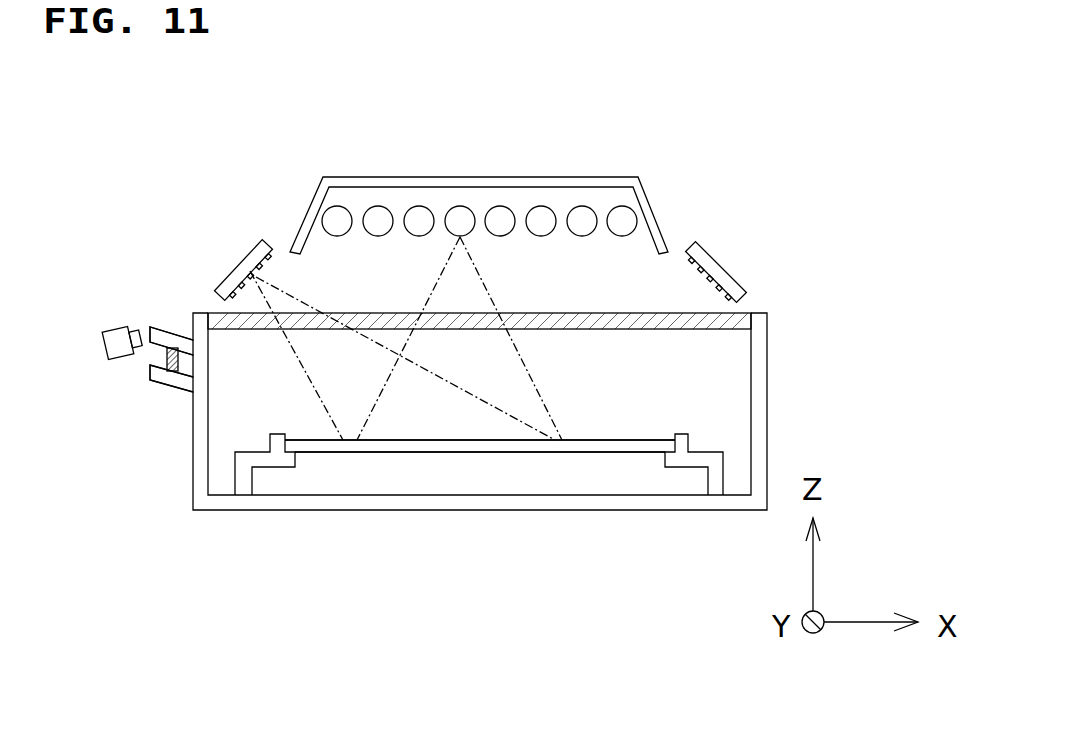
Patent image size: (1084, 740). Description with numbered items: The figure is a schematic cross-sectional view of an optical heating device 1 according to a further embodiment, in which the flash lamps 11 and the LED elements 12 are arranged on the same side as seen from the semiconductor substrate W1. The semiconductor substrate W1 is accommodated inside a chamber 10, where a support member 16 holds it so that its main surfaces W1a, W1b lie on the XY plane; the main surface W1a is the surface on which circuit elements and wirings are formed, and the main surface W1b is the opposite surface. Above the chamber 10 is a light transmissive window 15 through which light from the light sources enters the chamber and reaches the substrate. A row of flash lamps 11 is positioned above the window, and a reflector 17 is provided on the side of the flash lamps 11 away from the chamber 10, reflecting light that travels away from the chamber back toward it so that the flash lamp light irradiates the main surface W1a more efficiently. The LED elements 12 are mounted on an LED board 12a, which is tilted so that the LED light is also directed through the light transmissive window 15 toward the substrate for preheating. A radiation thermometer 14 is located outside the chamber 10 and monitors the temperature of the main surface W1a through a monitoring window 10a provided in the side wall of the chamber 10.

The optical heating device 1 is at (130, 155).
The chamber 10 is at (160, 507).
The monitoring window 10a is at (170, 371).
The flash lamps 11 is at (326, 207).
The LED elements 12 is at (238, 264).
The LED board 12a is at (260, 257).
The radiation thermometer 14 is at (110, 333).
The light transmissive window 15 is at (745, 314).
The support member 16 is at (690, 457).
The reflector 17 is at (649, 203).
The semiconductor substrate W1 is at (642, 453).
The main surface W1a is at (653, 438).
The main surface W1b is at (480, 455).